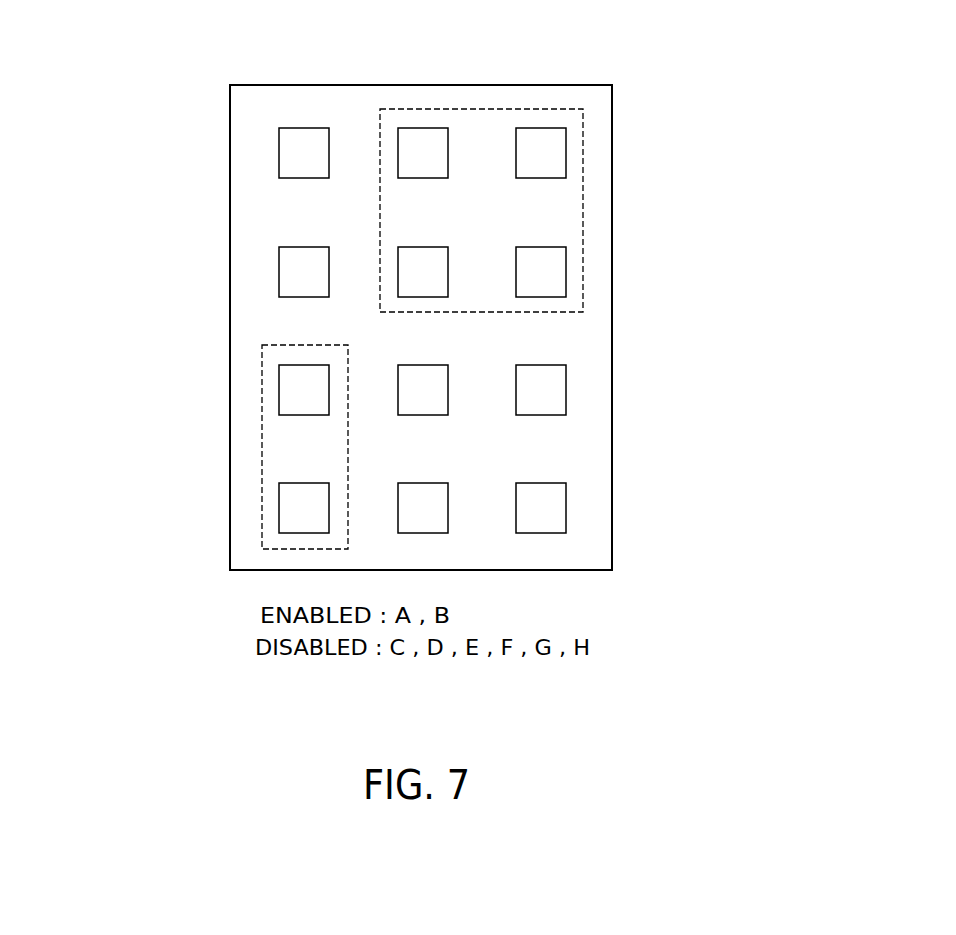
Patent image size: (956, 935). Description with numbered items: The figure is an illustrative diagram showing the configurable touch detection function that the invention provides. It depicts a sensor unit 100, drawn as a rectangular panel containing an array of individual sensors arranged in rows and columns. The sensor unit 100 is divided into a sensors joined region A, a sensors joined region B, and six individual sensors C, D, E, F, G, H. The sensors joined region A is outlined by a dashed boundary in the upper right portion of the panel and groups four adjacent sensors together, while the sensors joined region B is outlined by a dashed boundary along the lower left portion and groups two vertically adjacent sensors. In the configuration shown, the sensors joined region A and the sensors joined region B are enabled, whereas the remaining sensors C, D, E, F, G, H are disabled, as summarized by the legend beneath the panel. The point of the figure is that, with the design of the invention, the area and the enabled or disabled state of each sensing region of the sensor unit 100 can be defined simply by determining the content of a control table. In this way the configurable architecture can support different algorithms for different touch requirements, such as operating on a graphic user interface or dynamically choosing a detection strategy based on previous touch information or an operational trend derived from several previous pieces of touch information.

The sensor unit 100 is at (382, 85).
The sensors joined region A is at (613, 210).
The sensors joined region B is at (190, 447).
The sensor C is at (304, 153).
The sensor D is at (304, 272).
The sensor E is at (423, 390).
The sensor F is at (541, 390).
The sensor G is at (423, 508).
The sensor H is at (541, 508).